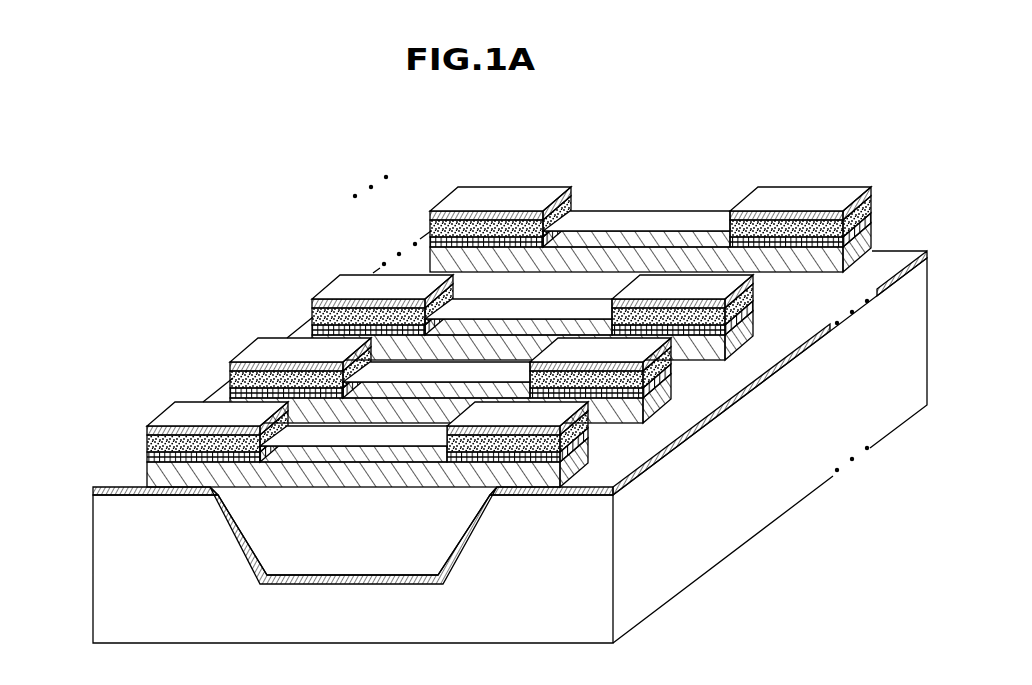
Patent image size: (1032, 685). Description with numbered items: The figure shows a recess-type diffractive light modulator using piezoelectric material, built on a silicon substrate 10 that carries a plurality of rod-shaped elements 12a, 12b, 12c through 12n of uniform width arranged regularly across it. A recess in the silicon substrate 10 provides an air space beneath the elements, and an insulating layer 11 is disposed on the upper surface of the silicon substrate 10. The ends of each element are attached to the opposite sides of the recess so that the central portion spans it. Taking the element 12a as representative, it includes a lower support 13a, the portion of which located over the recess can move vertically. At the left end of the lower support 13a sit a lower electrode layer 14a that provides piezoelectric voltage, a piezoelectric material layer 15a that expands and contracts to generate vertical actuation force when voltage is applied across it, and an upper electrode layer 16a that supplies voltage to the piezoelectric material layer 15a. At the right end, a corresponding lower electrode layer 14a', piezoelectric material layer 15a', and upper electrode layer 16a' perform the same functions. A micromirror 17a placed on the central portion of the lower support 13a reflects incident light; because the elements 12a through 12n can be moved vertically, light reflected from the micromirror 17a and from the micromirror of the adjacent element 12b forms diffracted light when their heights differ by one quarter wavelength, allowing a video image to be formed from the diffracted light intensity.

The silicon substrate 10 is at (95, 566).
The insulating layer 11 is at (95, 488).
The element 12a is at (403, 434).
The element 12b is at (243, 350).
The element 12c is at (328, 285).
The element 12n is at (446, 195).
The lower support 13a is at (147, 474).
The lower electrode layer 14a is at (316, 444).
The piezoelectric material layer 15a is at (316, 430).
The upper electrode layer 16a is at (330, 412).
The micromirror 17a is at (288, 433).
The lower electrode layer 14a' is at (647, 532).
The piezoelectric material layer 15a' is at (662, 512).
The upper electrode layer 16a' is at (671, 497).